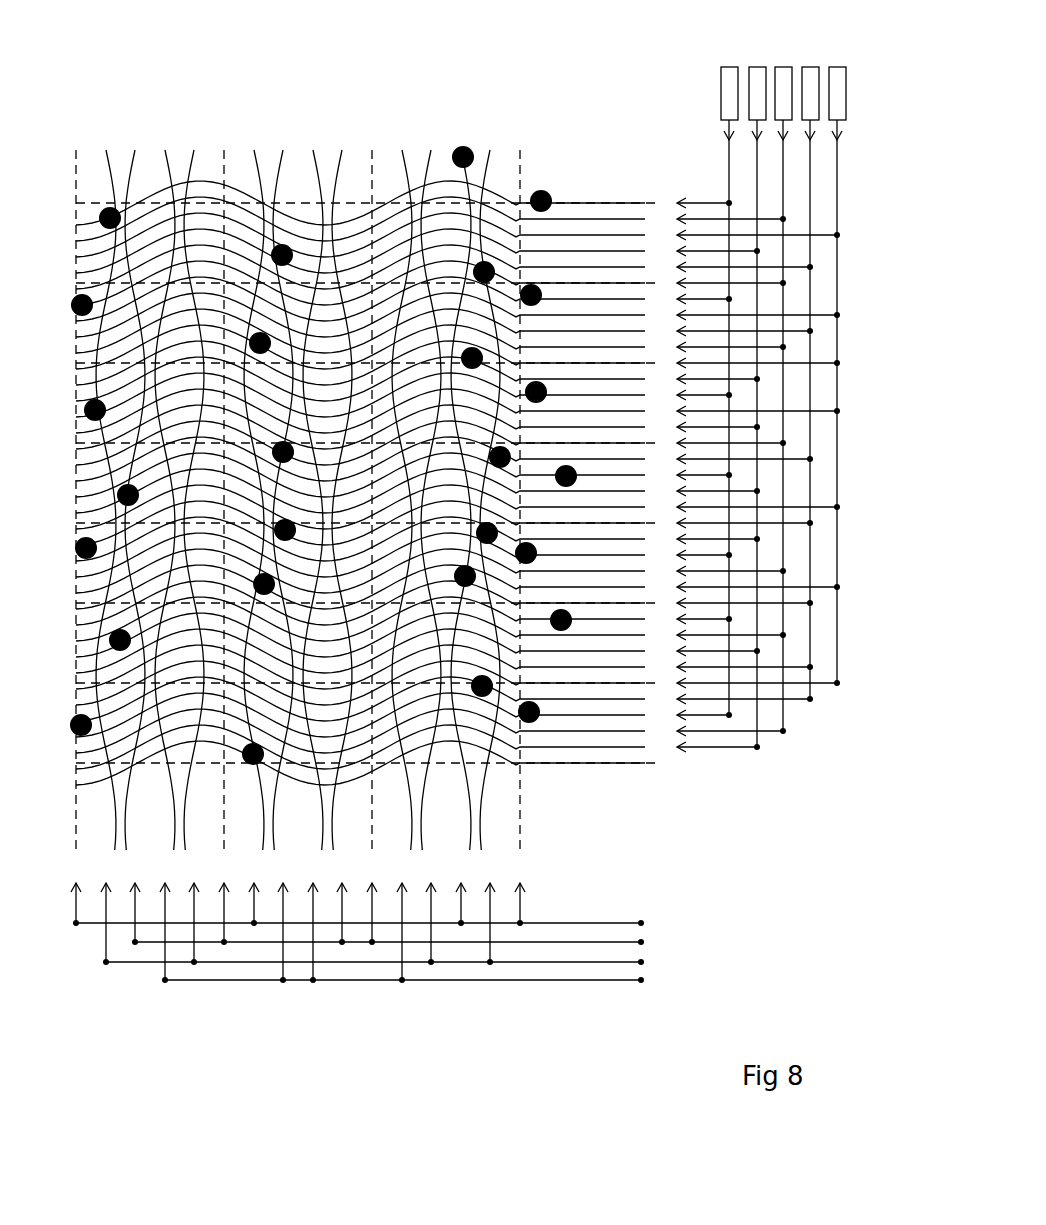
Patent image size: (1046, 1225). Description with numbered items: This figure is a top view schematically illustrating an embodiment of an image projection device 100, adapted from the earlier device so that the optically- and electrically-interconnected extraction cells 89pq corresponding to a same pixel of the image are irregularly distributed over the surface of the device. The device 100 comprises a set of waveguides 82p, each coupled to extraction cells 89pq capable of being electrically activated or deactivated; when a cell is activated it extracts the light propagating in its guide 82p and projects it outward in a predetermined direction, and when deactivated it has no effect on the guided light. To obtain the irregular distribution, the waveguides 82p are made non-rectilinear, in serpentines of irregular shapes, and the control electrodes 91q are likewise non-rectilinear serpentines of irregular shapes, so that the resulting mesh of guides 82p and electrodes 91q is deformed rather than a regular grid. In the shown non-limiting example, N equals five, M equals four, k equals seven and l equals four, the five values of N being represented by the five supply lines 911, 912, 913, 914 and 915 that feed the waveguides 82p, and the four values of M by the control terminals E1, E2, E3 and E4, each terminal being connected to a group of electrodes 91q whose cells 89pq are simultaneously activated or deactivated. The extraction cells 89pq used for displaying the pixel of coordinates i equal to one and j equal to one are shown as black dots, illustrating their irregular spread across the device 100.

The image projection device 100 is at (116, 83).
The control electrode 91q is at (196, 210).
The extraction cell 89pq is at (538, 192).
The waveguide 82p is at (618, 717).
The control electrode 911 is at (729, 66).
The control electrode 912 is at (757, 66).
The control electrode 913 is at (783, 66).
The control electrode 914 is at (810, 66).
The control electrode 915 is at (837, 66).
The control terminal E1 is at (641, 923).
The control terminal E2 is at (641, 942).
The control terminal E3 is at (641, 962).
The control terminal E4 is at (641, 980).